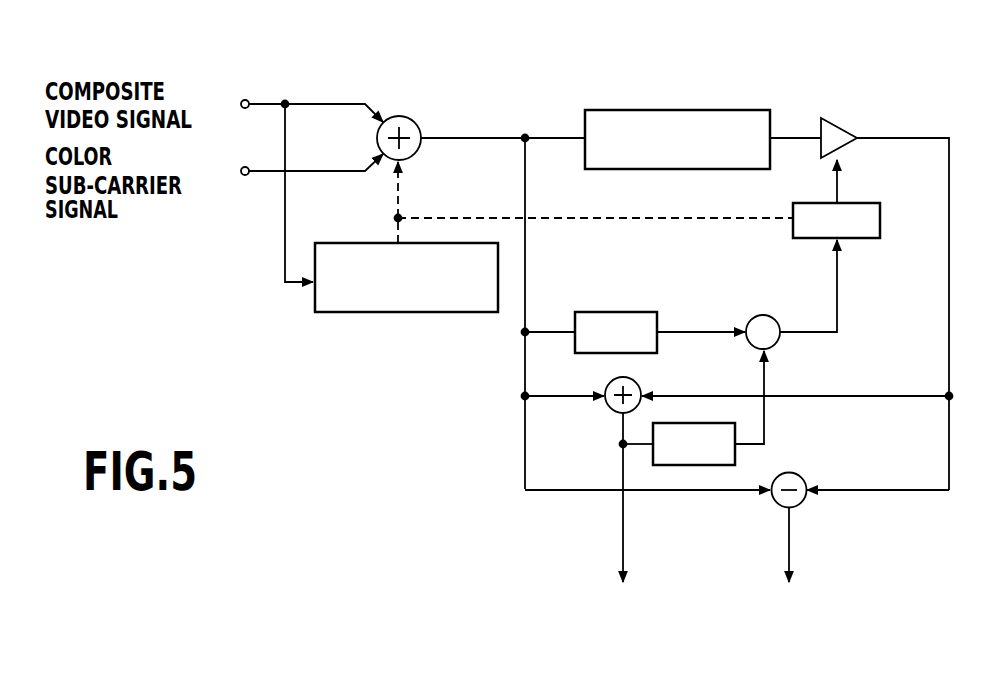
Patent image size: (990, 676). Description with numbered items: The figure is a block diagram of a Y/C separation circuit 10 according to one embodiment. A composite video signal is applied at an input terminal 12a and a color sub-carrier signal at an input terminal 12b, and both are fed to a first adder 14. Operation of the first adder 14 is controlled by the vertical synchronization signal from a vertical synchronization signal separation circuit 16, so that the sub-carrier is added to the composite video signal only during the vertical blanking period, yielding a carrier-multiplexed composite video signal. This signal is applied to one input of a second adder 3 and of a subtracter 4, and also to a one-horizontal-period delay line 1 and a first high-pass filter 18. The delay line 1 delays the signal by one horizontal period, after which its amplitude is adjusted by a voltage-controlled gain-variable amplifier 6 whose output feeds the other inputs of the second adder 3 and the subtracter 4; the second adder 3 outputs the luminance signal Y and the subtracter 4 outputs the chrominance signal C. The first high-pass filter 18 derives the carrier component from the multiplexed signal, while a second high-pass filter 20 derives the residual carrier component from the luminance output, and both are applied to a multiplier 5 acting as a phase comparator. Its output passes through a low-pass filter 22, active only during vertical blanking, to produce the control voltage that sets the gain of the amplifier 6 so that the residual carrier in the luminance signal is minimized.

The Y/C separation circuit 10 is at (275, 28).
The input terminal 12a is at (247, 100).
The input terminal 12b is at (247, 176).
The first adder 14 is at (393, 118).
The vertical synchronization signal separation circuit 16 is at (405, 313).
The 1H delay line 1 is at (690, 110).
The voltage-controlled gain-variable amplifier 6 is at (843, 128).
The low-pass filter 22 is at (860, 240).
The multiplier 5 is at (763, 316).
The first high-pass filter 18 is at (607, 312).
The second high-pass filter 20 is at (700, 423).
The second adder 3 is at (610, 408).
The subtracter 4 is at (800, 474).